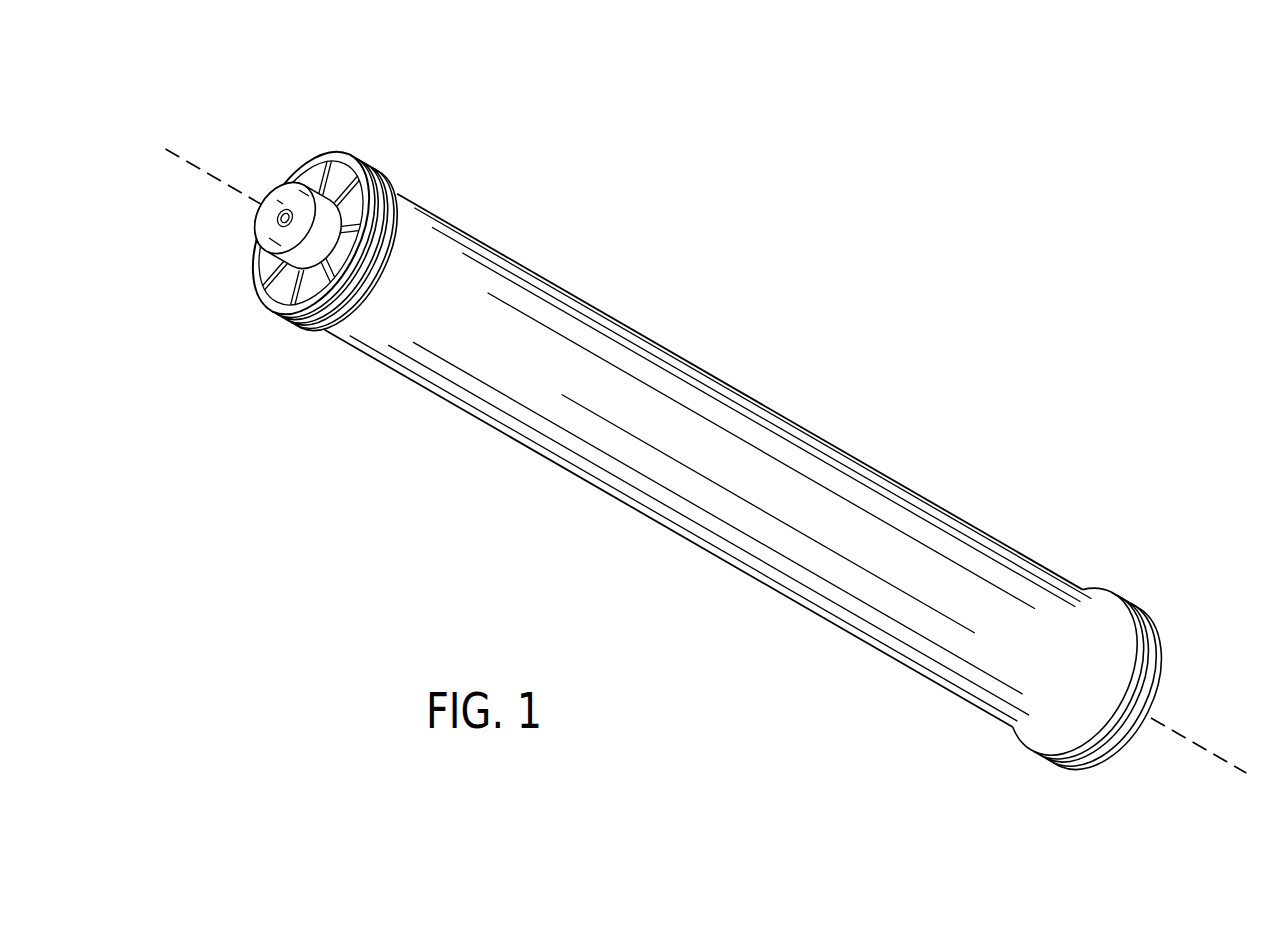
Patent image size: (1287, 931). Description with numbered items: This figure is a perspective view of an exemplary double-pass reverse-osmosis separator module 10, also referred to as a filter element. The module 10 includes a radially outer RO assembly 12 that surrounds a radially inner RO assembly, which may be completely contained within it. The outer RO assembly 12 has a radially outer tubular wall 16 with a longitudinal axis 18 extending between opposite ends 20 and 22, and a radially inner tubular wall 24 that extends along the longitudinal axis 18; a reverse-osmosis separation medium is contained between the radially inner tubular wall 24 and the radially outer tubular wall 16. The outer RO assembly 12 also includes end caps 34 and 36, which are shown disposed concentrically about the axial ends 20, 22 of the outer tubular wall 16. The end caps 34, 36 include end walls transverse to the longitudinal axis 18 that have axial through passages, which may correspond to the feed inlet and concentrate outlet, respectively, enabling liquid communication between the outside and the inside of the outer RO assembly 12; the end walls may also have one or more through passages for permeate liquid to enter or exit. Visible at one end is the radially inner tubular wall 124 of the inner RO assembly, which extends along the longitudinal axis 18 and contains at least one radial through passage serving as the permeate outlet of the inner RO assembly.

The double-pass reverse-osmosis separator module 10 is at (804, 283).
The outer RO assembly 12 is at (708, 460).
The radially outer tubular wall 16 is at (848, 597).
The longitudinal axis 18 is at (192, 159).
The end 20 is at (296, 200).
The end 22 is at (1172, 641).
The radially inner tubular wall 24 is at (260, 222).
The end cap 34 is at (260, 285).
The end cap 36 is at (1108, 757).
The radially inner tubular wall 124 is at (268, 188).